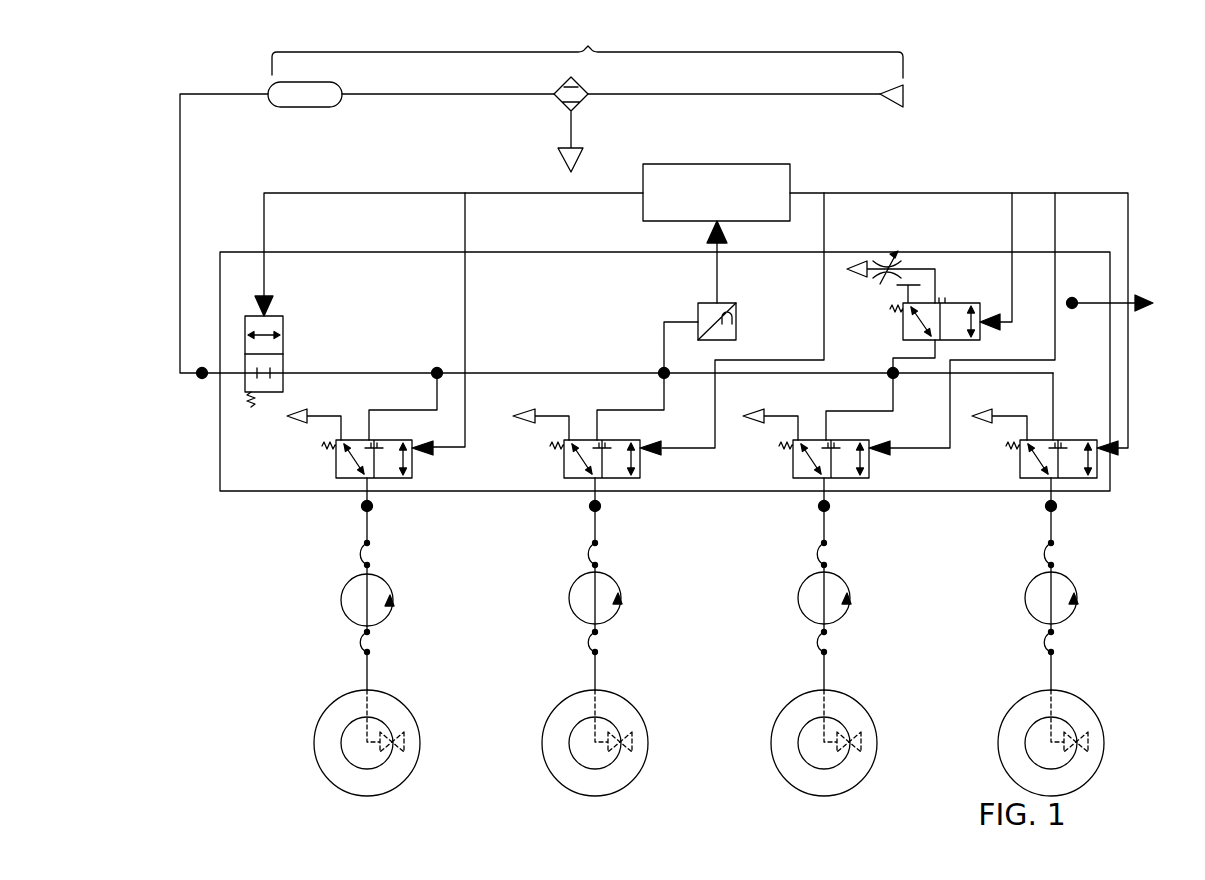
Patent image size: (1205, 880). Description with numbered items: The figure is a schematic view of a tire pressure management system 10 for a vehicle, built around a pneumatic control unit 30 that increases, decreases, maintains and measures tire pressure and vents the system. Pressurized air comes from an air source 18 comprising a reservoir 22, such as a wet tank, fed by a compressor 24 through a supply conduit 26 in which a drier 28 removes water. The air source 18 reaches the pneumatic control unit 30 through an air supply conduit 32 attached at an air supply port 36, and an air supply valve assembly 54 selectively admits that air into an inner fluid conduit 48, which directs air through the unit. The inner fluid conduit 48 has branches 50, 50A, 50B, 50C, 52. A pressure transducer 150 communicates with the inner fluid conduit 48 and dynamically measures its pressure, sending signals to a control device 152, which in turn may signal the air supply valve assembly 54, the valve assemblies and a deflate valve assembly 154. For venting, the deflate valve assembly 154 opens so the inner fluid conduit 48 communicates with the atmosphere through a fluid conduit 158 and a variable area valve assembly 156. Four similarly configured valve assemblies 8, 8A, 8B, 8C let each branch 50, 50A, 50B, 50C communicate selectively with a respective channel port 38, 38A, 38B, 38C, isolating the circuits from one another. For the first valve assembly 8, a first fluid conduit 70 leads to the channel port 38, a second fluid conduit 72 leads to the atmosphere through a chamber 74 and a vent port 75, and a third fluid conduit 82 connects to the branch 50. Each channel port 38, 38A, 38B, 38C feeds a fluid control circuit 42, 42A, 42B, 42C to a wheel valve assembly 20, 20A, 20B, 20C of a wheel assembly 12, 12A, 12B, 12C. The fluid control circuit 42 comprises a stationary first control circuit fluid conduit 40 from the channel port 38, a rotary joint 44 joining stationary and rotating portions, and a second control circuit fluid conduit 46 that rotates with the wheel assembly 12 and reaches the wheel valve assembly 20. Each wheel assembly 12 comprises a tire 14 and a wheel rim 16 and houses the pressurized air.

The tire pressure management system 10 is at (1038, 92).
The air source 18 is at (587, 51).
The reservoir 22 is at (305, 108).
The supply conduit 26 is at (445, 96).
The drier 28 is at (580, 103).
The compressor 24 is at (882, 100).
The air supply conduit 32 is at (180, 222).
The air supply port 36 is at (202, 366).
The air supply valve assembly 54 is at (283, 317).
The control device 152 is at (643, 172).
The pressure transducer 150 is at (698, 310).
The deflate valve assembly 154 is at (903, 320).
The variable area valve assembly 156 is at (880, 282).
The fluid conduit 158 is at (935, 272).
The vent port 75 is at (1072, 310).
The branch 52 is at (893, 360).
The inner fluid conduit 48 is at (568, 372).
The chamber 74 is at (508, 281).
The pneumatic control unit 30 is at (220, 473).
The branch 50 is at (437, 397).
The branch 50A is at (664, 392).
The branch 50B is at (893, 394).
The branch 50C is at (1053, 385).
The valve assembly 8 is at (336, 462).
The valve assembly 8A is at (564, 462).
The valve assembly 8B is at (793, 462).
The valve assembly 8C is at (1020, 462).
The second fluid conduit 72 is at (325, 416).
The third fluid conduit 82 is at (372, 433).
The first fluid conduit 70 is at (367, 494).
The channel port 38 is at (373, 507).
The channel port 38A is at (601, 508).
The channel port 38B is at (830, 508).
The channel port 38C is at (1057, 508).
The first control circuit fluid conduit 40 is at (367, 531).
The fluid control circuit 42 is at (370, 543).
The fluid control circuit 42A is at (595, 531).
The fluid control circuit 42B is at (824, 531).
The fluid control circuit 42C is at (1051, 533).
The rotary joint 44 is at (393, 596).
The second control circuit fluid conduit 46 is at (370, 656).
The wheel assembly 12 is at (313, 742).
The wheel assembly 12A is at (542, 742).
The wheel assembly 12B is at (771, 742).
The wheel assembly 12C is at (998, 743).
The tire 14 is at (335, 775).
The wheel rim 16 is at (395, 736).
The wheel valve assembly 20 is at (395, 748).
The wheel valve assembly 20A is at (622, 748).
The wheel valve assembly 20B is at (851, 748).
The wheel valve assembly 20C is at (1078, 748).